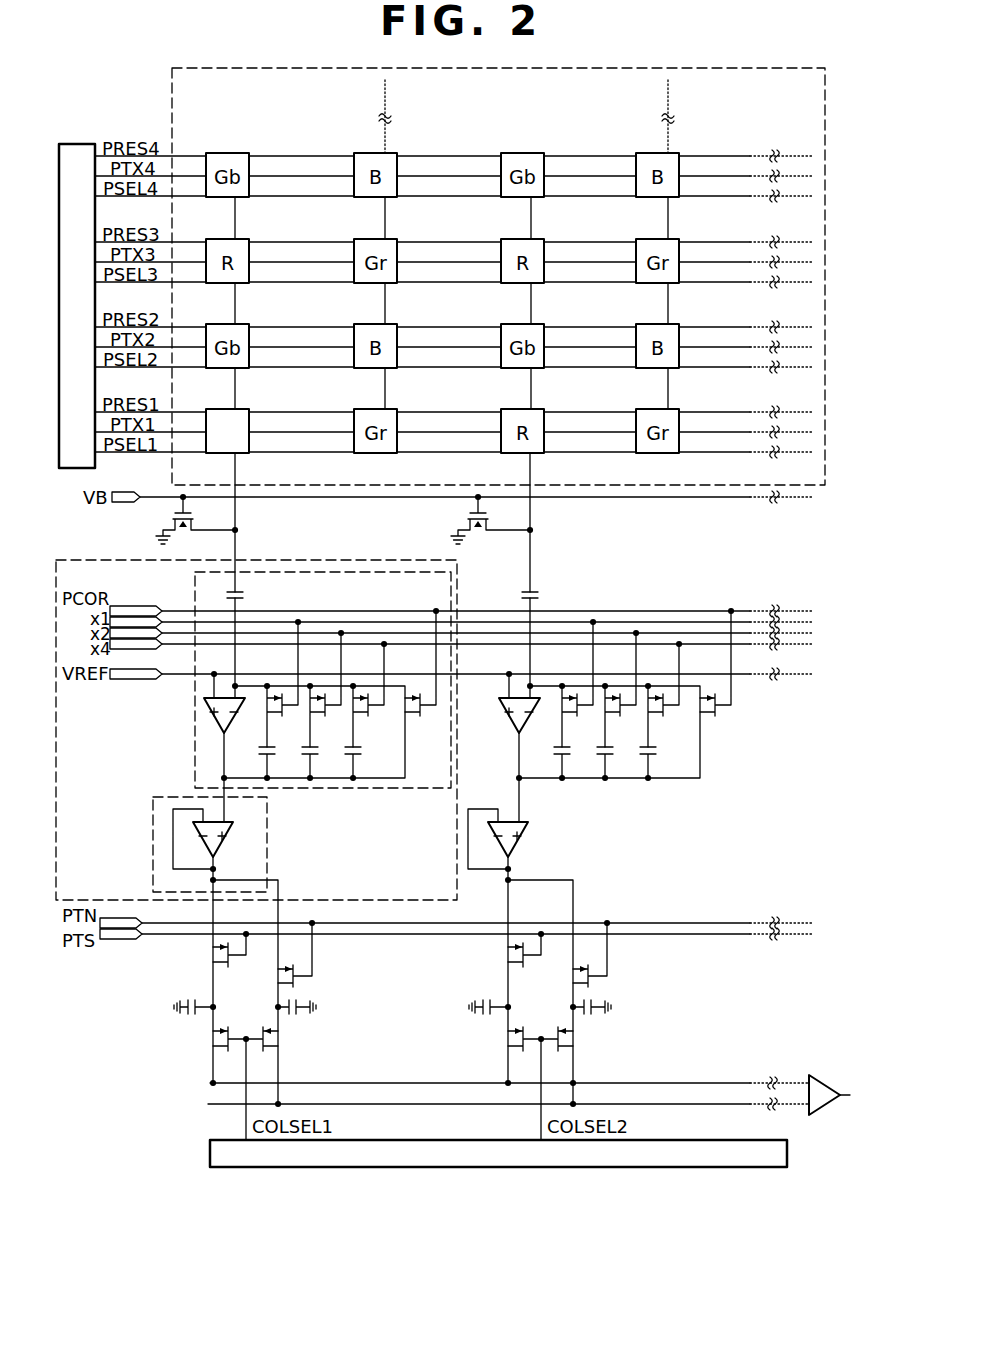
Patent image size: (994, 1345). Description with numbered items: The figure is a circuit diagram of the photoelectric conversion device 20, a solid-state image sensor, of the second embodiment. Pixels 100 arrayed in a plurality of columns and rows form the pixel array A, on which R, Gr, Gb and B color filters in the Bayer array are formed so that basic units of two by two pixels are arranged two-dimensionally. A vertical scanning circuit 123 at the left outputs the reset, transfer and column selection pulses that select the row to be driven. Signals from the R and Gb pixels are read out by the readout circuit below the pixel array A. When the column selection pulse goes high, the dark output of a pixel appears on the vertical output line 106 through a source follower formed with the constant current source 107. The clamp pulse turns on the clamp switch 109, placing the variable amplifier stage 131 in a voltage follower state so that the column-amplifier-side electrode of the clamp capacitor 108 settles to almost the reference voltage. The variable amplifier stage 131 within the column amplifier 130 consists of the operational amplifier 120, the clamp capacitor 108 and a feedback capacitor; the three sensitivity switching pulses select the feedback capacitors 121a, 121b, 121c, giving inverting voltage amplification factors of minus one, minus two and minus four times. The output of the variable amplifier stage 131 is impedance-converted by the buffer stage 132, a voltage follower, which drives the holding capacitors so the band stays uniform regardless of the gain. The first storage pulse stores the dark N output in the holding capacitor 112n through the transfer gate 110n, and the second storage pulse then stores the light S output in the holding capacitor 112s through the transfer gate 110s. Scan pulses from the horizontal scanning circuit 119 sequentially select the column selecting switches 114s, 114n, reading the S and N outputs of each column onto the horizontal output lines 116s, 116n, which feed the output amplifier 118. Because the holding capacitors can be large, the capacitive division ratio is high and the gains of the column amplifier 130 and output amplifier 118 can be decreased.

The pixel array A is at (703, 68).
The vertical scanning circuit 123 is at (80, 143).
The pixel 100 is at (248, 410).
The vertical output line 106 is at (238, 470).
The constant current source 107 is at (168, 520).
The clamp capacitor 108 is at (248, 596).
The column amplifier 130 is at (330, 557).
The variable amplifier stage 131 is at (193, 579).
The buffer stage 132 is at (152, 838).
The operational amplifier 120 is at (217, 718).
The clamp switch 109 is at (413, 713).
The feedback capacitor 121a is at (273, 758).
The feedback capacitor 121b is at (316, 758).
The feedback capacitor 121c is at (359, 758).
The transfer gate 110s is at (211, 953).
The transfer gate 110n is at (300, 982).
The holding capacitor 112s is at (197, 998).
The holding capacitor 112n is at (293, 1015).
The column selecting switch 114s is at (210, 1036).
The column selecting switch 114n is at (277, 1040).
The horizontal output line 116s is at (210, 1083).
The horizontal output line 116n is at (208, 1104).
The output amplifier 118 is at (827, 1112).
The horizontal scanning circuit 119 is at (210, 1152).
The photoelectric conversion device 20 is at (663, 1205).